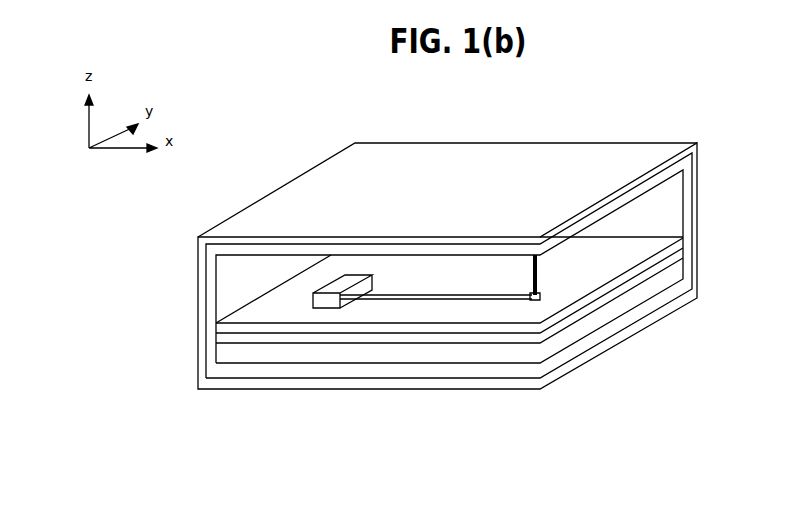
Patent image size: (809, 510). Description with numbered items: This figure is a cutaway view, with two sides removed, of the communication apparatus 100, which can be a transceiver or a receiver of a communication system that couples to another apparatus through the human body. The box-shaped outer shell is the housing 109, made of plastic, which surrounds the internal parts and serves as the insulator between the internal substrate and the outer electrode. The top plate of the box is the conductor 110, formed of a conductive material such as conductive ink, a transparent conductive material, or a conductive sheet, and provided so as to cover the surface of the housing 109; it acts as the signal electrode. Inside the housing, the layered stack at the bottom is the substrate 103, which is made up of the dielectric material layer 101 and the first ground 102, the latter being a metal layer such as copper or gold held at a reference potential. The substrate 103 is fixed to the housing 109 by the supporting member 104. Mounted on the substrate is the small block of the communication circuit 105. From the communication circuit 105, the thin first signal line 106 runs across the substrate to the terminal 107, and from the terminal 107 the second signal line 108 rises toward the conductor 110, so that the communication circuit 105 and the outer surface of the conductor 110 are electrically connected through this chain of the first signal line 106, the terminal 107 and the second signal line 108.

The communication apparatus 100 is at (505, 105).
The dielectric material layer 101 is at (248, 330).
The first ground 102 is at (288, 338).
The substrate 103 is at (234, 430).
The supporting member 104 is at (335, 360).
The communication circuit 105 is at (345, 301).
The first signal line 106 is at (427, 300).
The terminal 107 is at (533, 301).
The second signal line 108 is at (541, 281).
The housing 109 is at (687, 207).
The conductor 110 is at (591, 168).